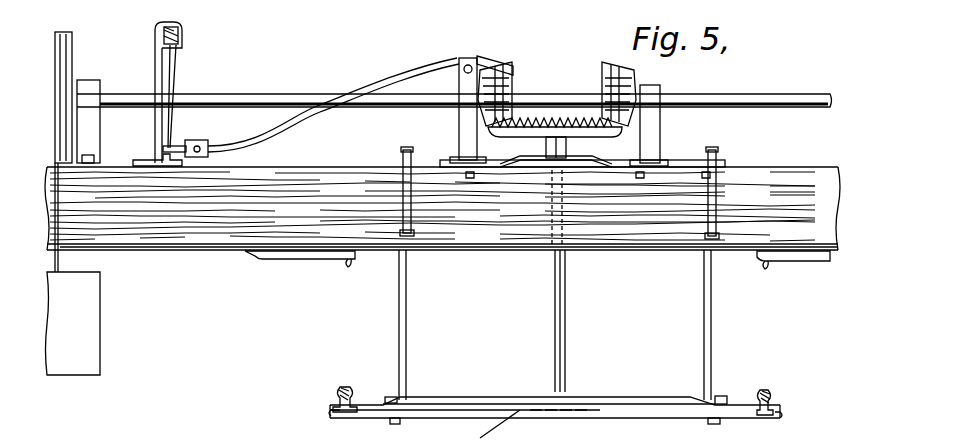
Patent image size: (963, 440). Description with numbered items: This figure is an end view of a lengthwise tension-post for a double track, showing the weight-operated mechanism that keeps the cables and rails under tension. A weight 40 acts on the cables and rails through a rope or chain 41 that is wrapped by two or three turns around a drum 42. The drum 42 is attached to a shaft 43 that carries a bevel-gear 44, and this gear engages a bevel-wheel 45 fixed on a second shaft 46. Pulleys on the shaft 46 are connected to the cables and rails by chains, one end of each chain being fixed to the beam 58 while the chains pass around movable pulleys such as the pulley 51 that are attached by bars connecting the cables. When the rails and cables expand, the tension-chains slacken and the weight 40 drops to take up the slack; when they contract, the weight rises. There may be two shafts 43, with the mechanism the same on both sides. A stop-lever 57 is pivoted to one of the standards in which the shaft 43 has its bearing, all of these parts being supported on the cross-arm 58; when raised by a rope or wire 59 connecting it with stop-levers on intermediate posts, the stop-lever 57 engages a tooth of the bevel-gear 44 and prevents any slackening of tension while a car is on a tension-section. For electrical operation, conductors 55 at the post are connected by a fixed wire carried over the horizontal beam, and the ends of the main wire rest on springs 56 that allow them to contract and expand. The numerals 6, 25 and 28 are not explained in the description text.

The plank 6 is at (350, 158).
The rail 25 is at (358, 377).
The clamp bolt 28 is at (402, 155).
The weight 40 is at (100, 358).
The rope or chain 41 is at (60, 265).
The drum 42 is at (72, 70).
The shaft 43 is at (205, 96).
The bevel-gear 44 is at (510, 90).
The bevel-wheel 45 is at (578, 102).
The shaft 46 is at (555, 325).
The movable pulley 51 is at (573, 156).
The conductor 55 is at (351, 264).
The spring 56 is at (289, 258).
The stop-lever 57 is at (388, 72).
The cross-arm 58 is at (185, 246).
The rope or wire 59 is at (168, 57).